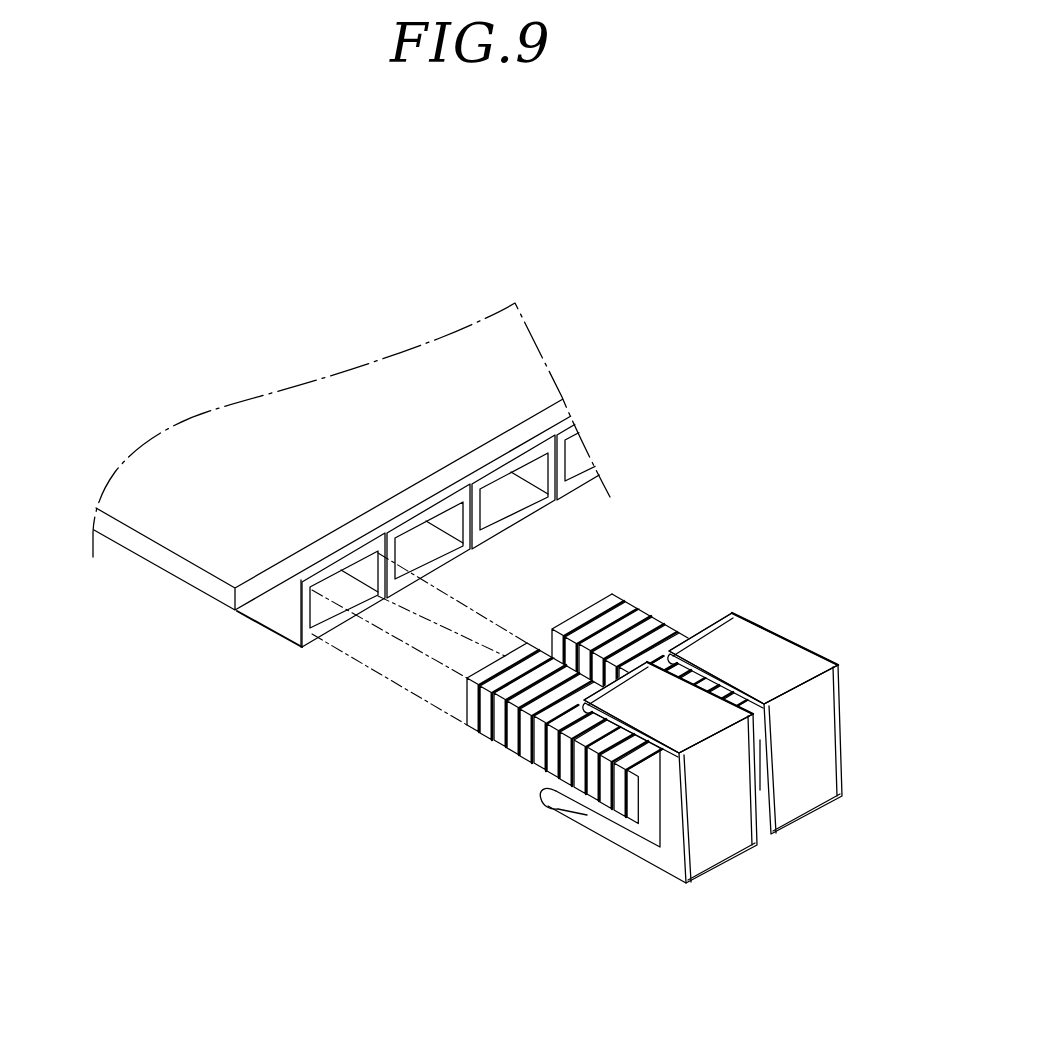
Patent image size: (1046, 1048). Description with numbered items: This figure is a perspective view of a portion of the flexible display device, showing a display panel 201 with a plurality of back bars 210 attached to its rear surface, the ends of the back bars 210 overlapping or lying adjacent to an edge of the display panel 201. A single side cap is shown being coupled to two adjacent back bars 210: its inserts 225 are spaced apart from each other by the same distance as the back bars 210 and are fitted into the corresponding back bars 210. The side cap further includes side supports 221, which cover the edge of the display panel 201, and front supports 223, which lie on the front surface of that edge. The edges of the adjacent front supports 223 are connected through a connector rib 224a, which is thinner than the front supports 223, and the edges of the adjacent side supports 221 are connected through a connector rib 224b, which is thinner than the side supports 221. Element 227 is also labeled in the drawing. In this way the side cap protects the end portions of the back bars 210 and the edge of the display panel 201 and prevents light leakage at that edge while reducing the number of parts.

The display panel 201 is at (152, 586).
The back bars 210 is at (263, 636).
The side support 221 is at (826, 731).
The front support 223 is at (773, 647).
The connector rib 224a is at (710, 690).
The connector rib 224b is at (760, 762).
The insert 225 is at (614, 596).
The housing window / latch 227 is at (588, 815).